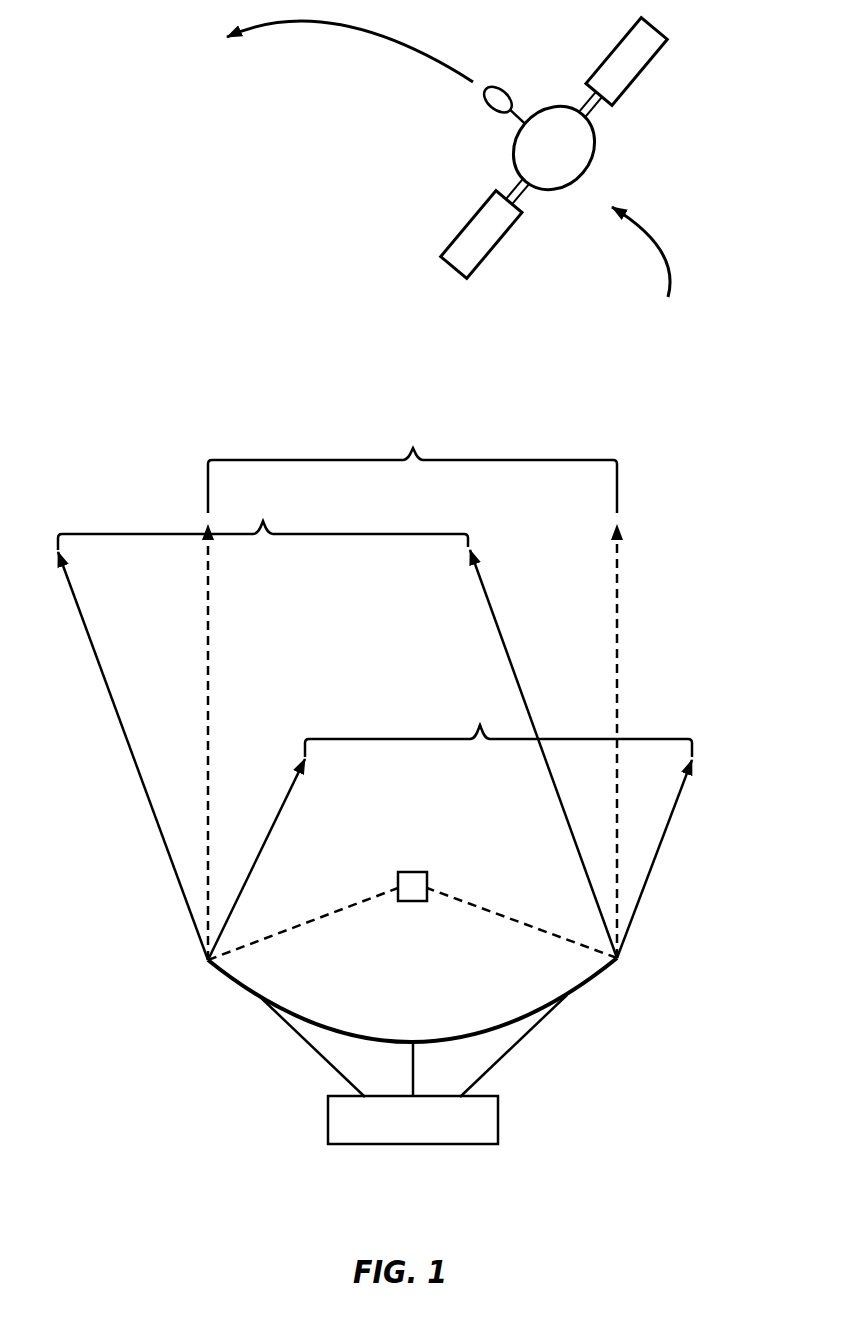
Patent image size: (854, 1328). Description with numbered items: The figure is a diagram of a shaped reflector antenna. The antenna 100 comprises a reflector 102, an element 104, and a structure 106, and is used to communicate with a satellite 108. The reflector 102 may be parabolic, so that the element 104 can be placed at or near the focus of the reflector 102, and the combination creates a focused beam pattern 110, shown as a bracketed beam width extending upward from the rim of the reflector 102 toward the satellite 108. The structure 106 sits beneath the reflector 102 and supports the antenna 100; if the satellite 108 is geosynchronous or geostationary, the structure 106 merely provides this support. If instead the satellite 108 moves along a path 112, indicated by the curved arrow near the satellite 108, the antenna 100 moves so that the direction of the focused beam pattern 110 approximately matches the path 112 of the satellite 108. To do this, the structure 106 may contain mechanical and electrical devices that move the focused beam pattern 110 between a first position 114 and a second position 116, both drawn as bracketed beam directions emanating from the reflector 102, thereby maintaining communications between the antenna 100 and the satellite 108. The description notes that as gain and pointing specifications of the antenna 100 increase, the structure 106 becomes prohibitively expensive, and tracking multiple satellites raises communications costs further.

The antenna 100 is at (190, 386).
The reflector 102 is at (232, 984).
The element 104 is at (413, 872).
The structure 106 is at (382, 1145).
The satellite 108 is at (588, 160).
The focused beam pattern 110 is at (412, 690).
The path 112 is at (650, 268).
The first position 114 is at (450, 830).
The second position 116 is at (337, 726).